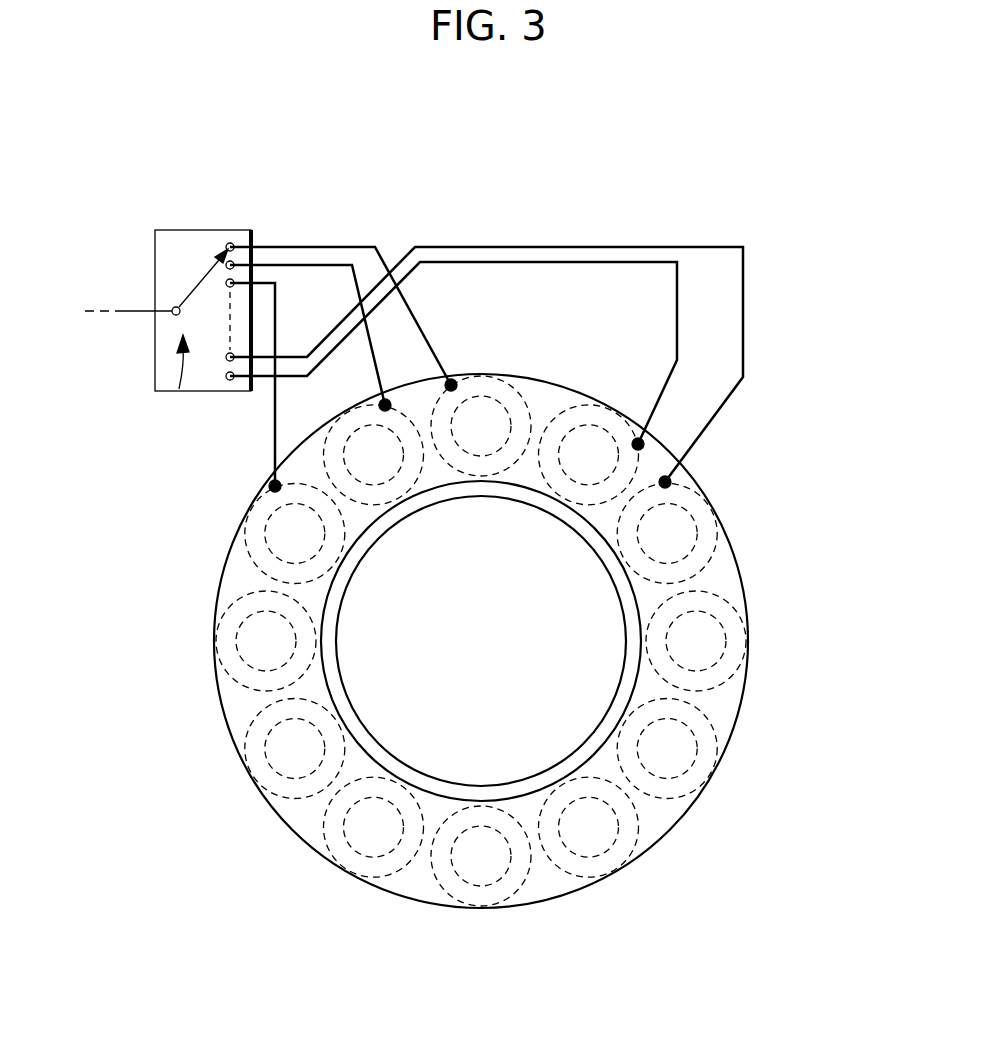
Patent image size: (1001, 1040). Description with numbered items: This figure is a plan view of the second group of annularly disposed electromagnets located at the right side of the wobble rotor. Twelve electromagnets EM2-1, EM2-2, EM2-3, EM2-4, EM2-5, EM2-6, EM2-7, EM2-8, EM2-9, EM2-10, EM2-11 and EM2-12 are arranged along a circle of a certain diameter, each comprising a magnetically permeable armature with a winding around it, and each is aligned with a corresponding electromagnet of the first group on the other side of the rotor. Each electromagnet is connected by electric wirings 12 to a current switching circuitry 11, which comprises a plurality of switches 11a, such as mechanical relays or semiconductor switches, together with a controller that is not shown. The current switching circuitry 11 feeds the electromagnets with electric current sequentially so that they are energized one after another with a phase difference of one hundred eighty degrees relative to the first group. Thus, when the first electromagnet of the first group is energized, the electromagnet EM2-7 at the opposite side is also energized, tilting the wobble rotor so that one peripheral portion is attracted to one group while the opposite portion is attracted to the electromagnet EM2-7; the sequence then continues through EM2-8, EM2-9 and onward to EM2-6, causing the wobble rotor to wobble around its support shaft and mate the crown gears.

The current switching circuitry 11 is at (197, 230).
The switch 11a is at (170, 393).
The electric wirings 12 is at (298, 265).
The electromagnet EM2-1 is at (488, 387).
The electromagnet EM2-2 is at (330, 428).
The electromagnet EM2-3 is at (240, 507).
The electromagnet EM2-4 is at (212, 633).
The electromagnet EM2-5 is at (240, 770).
The electromagnet EM2-6 is at (337, 867).
The electromagnet EM2-7 is at (437, 895).
The electromagnet EM2-8 is at (630, 860).
The electromagnet EM2-9 is at (727, 765).
The electromagnet EM2-10 is at (750, 642).
The electromagnet EM2-11 is at (720, 518).
The electromagnet EM2-12 is at (710, 405).